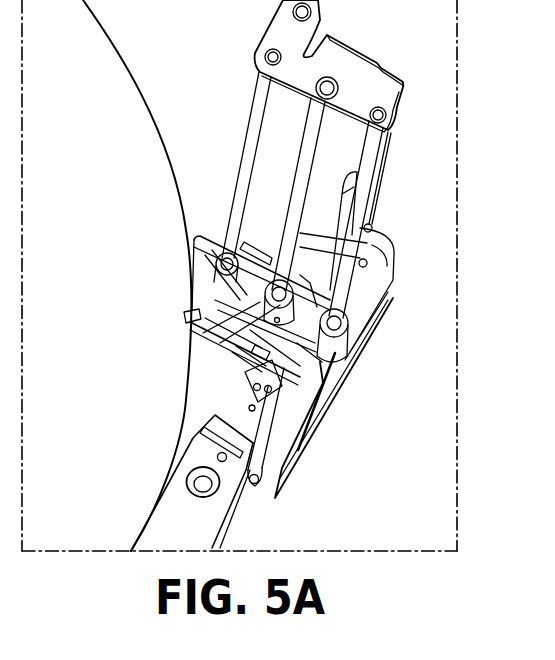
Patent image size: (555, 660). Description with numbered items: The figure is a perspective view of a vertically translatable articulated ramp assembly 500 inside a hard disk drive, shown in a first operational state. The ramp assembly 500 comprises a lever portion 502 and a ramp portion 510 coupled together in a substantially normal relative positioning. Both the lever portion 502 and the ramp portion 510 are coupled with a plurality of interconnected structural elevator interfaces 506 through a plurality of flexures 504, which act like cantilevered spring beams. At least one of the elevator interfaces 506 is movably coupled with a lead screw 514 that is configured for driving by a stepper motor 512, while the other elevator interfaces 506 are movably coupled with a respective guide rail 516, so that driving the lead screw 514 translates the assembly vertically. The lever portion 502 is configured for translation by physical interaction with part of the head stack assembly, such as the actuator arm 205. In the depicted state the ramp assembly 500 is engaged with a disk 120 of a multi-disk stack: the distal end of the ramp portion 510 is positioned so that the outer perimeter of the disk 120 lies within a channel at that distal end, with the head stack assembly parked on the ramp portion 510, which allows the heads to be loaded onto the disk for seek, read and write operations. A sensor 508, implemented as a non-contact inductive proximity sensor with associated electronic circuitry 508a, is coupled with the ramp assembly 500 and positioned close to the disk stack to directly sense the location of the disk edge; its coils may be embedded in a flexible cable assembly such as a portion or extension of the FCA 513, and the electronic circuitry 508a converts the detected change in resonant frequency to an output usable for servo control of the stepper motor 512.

The disk 120 is at (90, 88).
The actuator arm 205 is at (198, 535).
The articulated ramp assembly 500 is at (130, 172).
The lever portion 502 is at (298, 398).
The flexures 504 is at (235, 300).
The elevator interfaces 506 is at (192, 264).
The sensor 508 is at (195, 250).
The electronic circuitry 508a is at (275, 255).
The ramp portion 510 is at (190, 314).
The stepper motor 512 is at (187, 398).
The FCA 513 is at (370, 217).
The lead screw 514 is at (320, 110).
The guide rail 516 is at (347, 250).